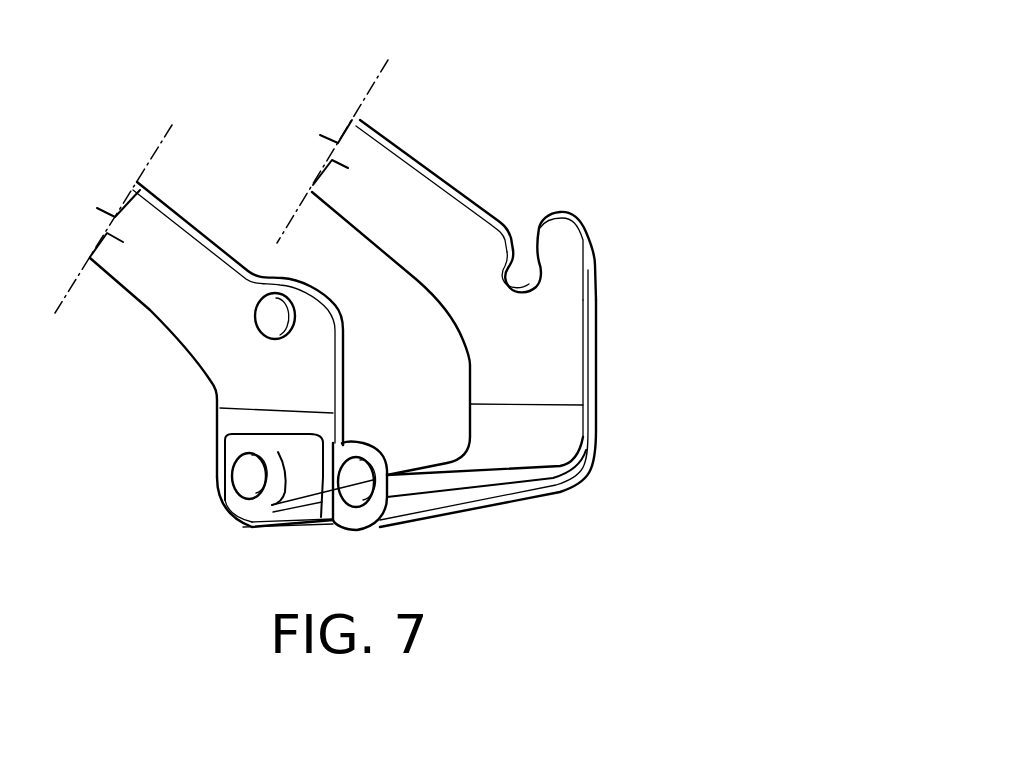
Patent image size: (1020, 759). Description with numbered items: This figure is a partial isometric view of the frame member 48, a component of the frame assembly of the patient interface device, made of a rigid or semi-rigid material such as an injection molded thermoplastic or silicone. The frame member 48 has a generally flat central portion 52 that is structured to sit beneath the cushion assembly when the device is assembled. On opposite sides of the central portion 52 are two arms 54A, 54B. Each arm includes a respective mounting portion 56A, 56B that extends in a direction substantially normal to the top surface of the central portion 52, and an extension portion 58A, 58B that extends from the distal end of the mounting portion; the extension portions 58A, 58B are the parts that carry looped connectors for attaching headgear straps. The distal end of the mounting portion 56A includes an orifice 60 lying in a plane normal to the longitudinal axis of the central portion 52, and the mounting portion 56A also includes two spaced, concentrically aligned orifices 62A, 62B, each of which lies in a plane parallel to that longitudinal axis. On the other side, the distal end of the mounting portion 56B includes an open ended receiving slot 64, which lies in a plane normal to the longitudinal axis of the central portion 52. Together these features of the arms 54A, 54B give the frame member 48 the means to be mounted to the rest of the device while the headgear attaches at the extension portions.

The frame member 48 is at (588, 112).
The central portion 52 is at (452, 482).
The arm 54A is at (213, 397).
The arm 54B is at (463, 347).
The mounting portion 56A is at (252, 373).
The mounting portion 56B is at (557, 340).
The extension portion 58A is at (168, 237).
The extension portion 58B is at (395, 175).
The orifice 60 is at (285, 332).
The orifice 62A is at (255, 490).
The orifice 62B is at (360, 487).
The open ended receiving slot 64 is at (540, 287).